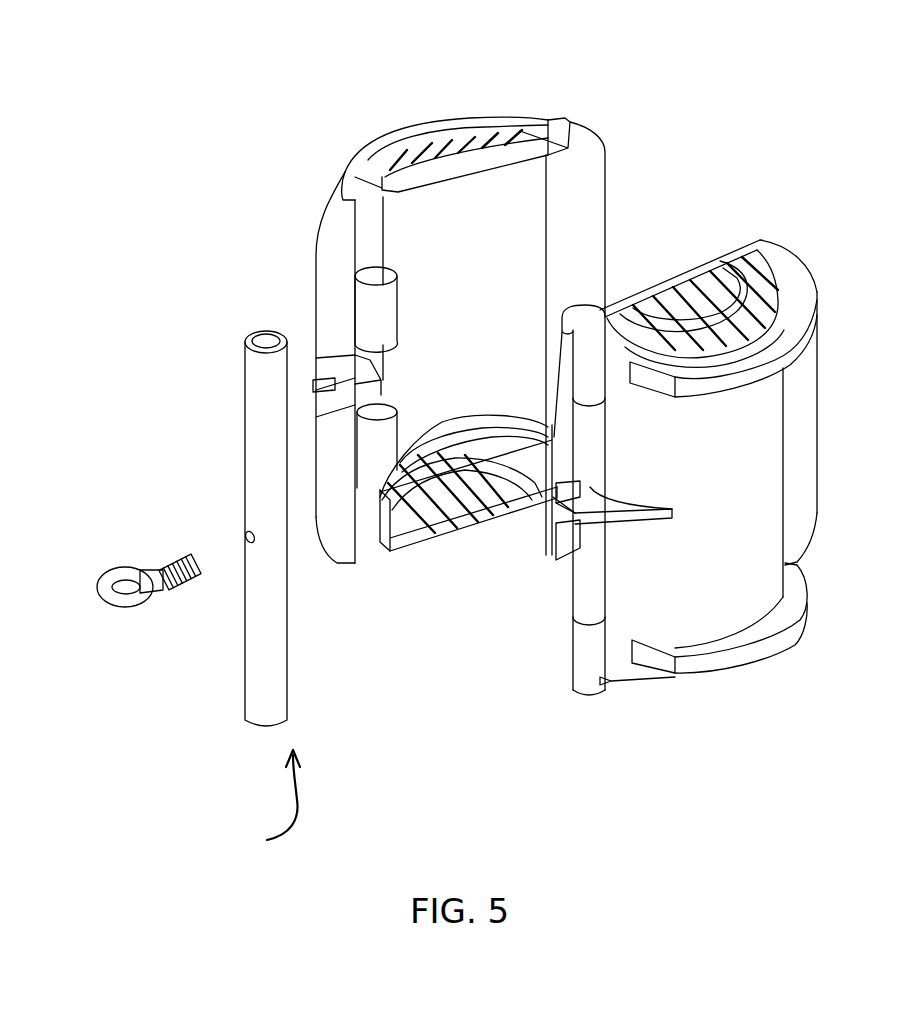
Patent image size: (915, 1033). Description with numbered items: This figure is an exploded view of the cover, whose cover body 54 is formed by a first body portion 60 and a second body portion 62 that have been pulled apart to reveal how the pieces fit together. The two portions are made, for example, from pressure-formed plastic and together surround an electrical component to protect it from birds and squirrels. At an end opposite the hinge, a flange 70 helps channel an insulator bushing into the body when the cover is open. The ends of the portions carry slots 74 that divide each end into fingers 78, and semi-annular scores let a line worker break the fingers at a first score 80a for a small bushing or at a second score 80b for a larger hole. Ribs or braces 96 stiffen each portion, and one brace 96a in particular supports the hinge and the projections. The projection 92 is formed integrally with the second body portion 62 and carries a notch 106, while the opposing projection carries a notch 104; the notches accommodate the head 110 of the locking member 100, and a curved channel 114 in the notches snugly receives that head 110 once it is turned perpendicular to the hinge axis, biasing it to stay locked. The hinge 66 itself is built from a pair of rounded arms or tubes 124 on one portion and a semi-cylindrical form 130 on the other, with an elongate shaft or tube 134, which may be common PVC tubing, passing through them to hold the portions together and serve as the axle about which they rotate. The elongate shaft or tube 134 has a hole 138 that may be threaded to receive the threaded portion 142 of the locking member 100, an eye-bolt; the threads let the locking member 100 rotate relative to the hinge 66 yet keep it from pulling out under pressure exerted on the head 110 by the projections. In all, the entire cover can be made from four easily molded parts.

The cover body 54 is at (780, 510).
The first body portion 60 is at (767, 447).
The second body portion 62 is at (527, 262).
The hinge 66 is at (268, 803).
The flange 70 is at (592, 240).
The slots 74 is at (426, 145).
The fingers 78 is at (465, 145).
The first score 80a is at (427, 175).
The second score 80b is at (407, 178).
The projection 92 is at (327, 277).
The ribs or braces 96 is at (567, 153).
The brace 96a is at (355, 410).
The locking member 100 is at (150, 592).
The notch 104 is at (565, 545).
The notch 106 is at (307, 350).
The head 110 is at (103, 582).
The channel 114 is at (317, 383).
The rounded arms or tubes 124 is at (385, 303).
The semi-cylindrical form 130 is at (583, 647).
The elongate shaft or tube 134 is at (260, 687).
The hole 138 is at (247, 533).
The threaded portion 142 is at (193, 568).